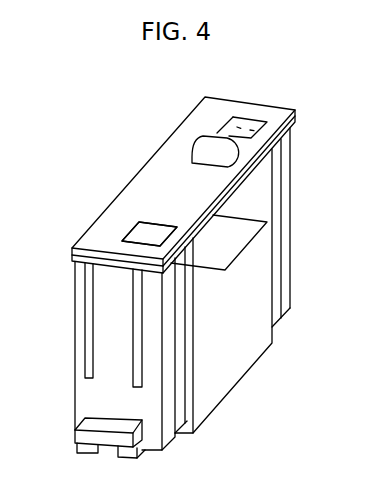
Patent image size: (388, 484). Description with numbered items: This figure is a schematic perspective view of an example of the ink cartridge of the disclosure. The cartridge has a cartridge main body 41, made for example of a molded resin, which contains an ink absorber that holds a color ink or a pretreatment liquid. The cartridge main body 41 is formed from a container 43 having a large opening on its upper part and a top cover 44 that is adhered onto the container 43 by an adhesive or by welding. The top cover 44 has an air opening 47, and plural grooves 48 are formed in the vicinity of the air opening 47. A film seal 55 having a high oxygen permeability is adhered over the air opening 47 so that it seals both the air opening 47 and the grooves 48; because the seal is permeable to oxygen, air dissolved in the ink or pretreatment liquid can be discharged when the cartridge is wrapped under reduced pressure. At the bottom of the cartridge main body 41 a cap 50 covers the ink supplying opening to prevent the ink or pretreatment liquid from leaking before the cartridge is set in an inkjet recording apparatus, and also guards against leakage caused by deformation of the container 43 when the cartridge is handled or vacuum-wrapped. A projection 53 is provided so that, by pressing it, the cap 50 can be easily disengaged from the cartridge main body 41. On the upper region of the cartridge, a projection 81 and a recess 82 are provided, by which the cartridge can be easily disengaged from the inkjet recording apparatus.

The cartridge main body 41 is at (96, 390).
The container 43 is at (100, 321).
The top cover 44 is at (137, 176).
The air opening 47 is at (131, 229).
The grooves 48 is at (141, 238).
The cap 50 is at (258, 295).
The projection 53 is at (76, 433).
The film seal 55 is at (248, 233).
The projection 81 is at (203, 135).
The recess 82 is at (232, 121).